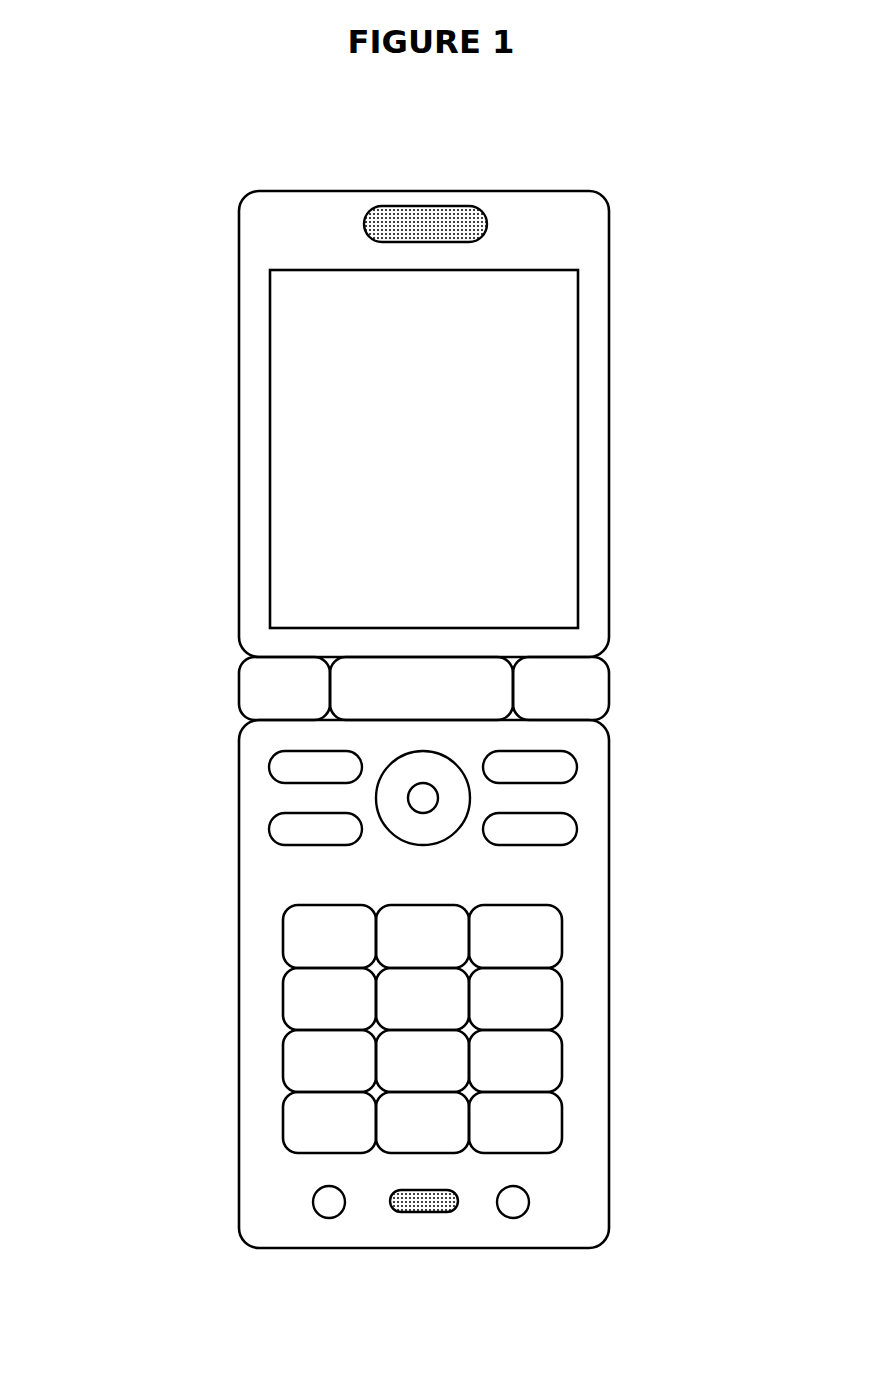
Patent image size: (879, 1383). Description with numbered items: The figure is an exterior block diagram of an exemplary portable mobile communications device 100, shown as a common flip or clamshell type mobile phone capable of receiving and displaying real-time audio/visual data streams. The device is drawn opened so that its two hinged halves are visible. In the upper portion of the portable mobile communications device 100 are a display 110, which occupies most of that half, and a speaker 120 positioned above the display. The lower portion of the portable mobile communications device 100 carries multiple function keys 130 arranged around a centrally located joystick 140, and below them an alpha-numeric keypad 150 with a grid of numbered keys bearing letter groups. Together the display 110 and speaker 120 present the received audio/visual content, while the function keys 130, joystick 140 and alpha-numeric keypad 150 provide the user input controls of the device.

The portable mobile communications device 100 is at (160, 221).
The display 110 is at (578, 344).
The speaker 120 is at (487, 220).
The function keys 130 is at (268, 767).
The navigation key 140 is at (407, 797).
The alpha-numeric keypad 150 is at (582, 1022).